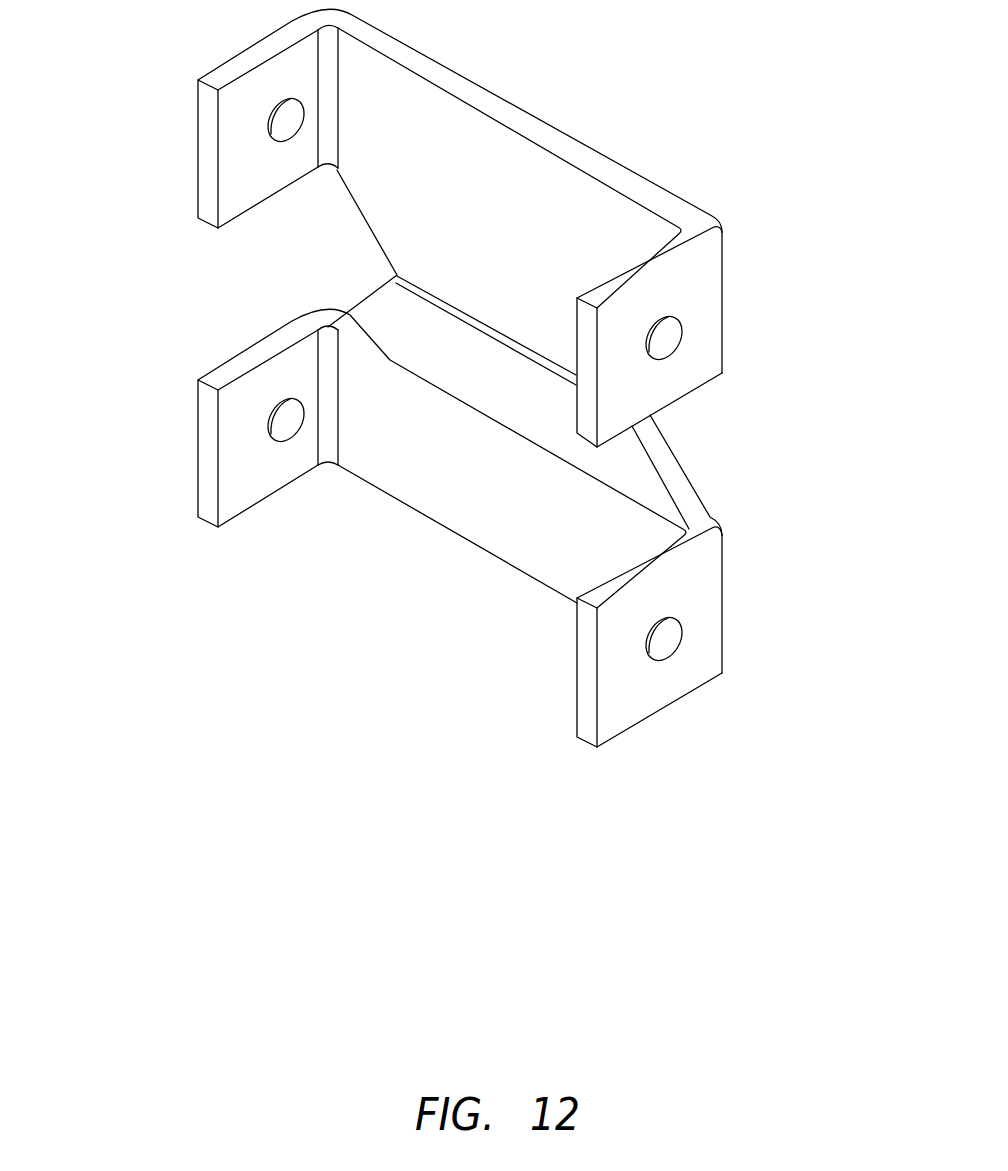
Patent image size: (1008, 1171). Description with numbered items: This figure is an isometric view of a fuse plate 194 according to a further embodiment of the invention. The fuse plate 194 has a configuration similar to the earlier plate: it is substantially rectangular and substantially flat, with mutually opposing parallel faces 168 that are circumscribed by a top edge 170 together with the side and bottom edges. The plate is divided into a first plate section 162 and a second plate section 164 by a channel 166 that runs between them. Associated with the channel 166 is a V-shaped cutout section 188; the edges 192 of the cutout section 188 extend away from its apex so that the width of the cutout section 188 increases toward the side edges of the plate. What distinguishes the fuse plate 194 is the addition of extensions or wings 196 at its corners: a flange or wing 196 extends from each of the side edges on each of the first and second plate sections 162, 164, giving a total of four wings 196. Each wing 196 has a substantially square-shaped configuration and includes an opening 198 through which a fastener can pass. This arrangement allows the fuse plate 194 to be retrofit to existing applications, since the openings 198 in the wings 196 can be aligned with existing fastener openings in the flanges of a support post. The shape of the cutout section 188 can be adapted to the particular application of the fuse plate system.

The first plate section 162 is at (580, 200).
The second plate section 164 is at (476, 520).
The channel 166 is at (440, 310).
The faces 168 is at (518, 231).
The top edge 170 is at (461, 285).
The cutout section 188 is at (352, 283).
The edges of the cutout section 192 is at (672, 472).
The fuse plate 194 is at (566, 352).
The wings 196 is at (230, 190).
The opening 198 is at (280, 134).